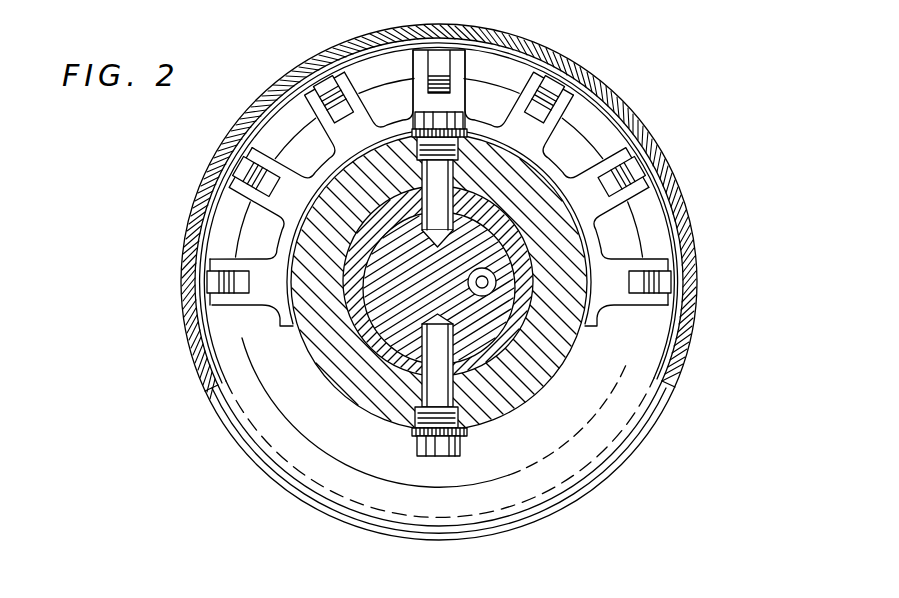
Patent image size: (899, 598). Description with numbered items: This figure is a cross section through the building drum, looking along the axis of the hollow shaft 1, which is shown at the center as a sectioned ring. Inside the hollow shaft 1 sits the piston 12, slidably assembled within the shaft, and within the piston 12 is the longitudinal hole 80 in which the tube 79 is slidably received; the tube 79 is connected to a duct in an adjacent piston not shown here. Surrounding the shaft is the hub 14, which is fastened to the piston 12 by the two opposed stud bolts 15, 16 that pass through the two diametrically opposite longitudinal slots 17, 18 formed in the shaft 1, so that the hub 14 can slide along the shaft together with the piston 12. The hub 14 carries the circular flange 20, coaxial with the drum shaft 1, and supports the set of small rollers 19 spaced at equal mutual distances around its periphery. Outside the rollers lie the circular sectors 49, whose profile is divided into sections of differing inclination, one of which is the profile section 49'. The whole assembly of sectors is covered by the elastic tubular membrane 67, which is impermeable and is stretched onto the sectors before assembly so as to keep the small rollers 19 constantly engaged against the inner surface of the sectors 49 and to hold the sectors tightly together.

The elastic tubular membrane 67 is at (530, 44).
The stud bolt 15 is at (459, 116).
The circular sector 49 is at (440, 282).
The profile section of sector 49 49' is at (430, 202).
The small roller 19 is at (218, 282).
The longitudinal slot 17 is at (432, 188).
The tube 79 is at (496, 279).
The longitudinal hole 80 is at (466, 282).
The piston 12 is at (410, 316).
The hub 14 is at (352, 378).
The longitudinal slot 18 is at (428, 372).
The stud bolt 16 is at (461, 447).
The circular flange 20 is at (246, 351).
The hollow shaft 1 is at (512, 334).